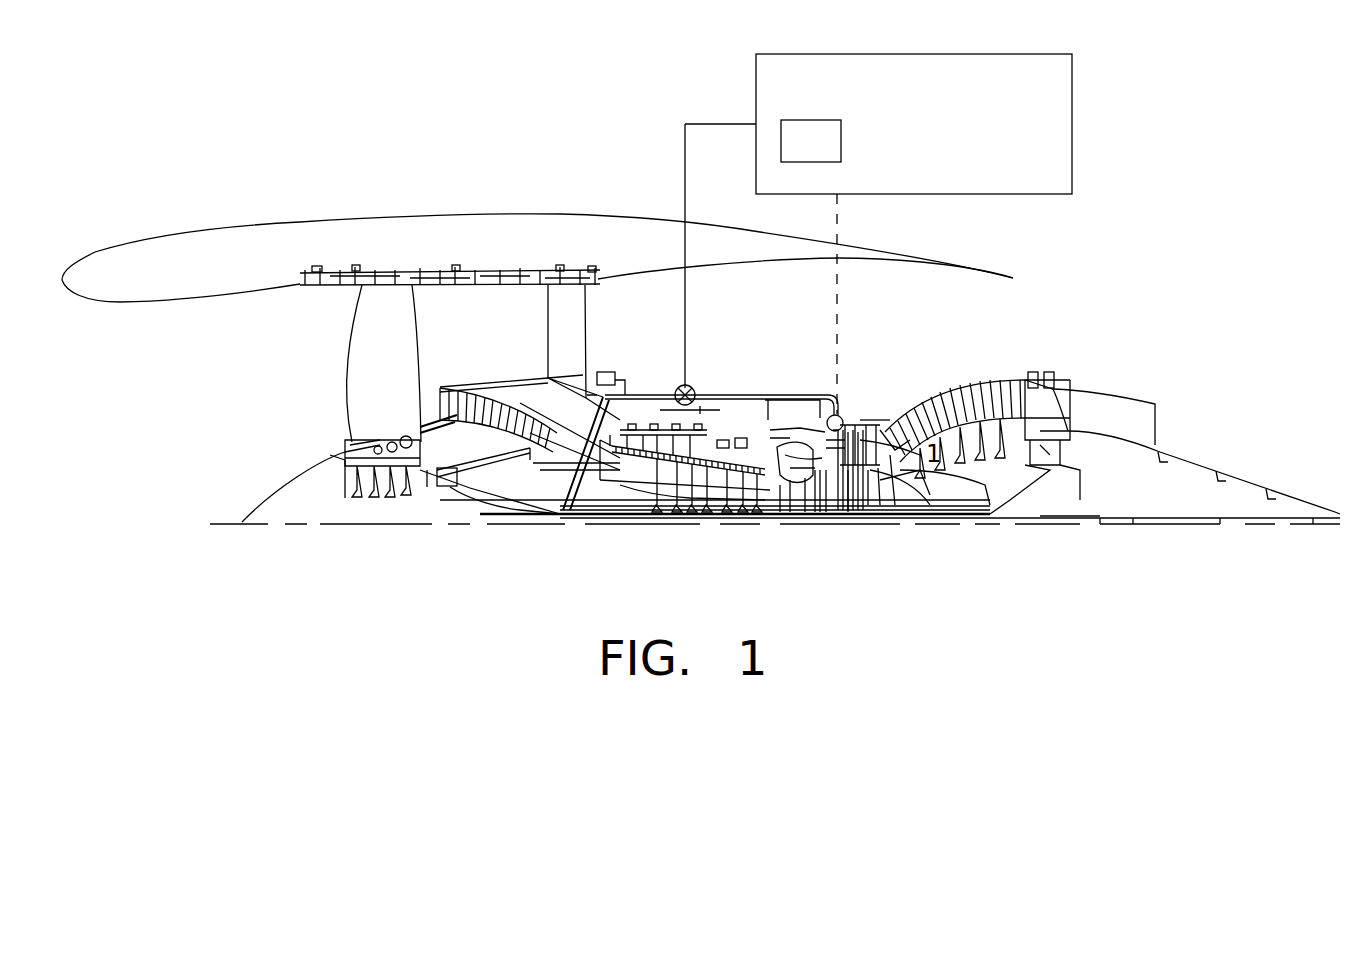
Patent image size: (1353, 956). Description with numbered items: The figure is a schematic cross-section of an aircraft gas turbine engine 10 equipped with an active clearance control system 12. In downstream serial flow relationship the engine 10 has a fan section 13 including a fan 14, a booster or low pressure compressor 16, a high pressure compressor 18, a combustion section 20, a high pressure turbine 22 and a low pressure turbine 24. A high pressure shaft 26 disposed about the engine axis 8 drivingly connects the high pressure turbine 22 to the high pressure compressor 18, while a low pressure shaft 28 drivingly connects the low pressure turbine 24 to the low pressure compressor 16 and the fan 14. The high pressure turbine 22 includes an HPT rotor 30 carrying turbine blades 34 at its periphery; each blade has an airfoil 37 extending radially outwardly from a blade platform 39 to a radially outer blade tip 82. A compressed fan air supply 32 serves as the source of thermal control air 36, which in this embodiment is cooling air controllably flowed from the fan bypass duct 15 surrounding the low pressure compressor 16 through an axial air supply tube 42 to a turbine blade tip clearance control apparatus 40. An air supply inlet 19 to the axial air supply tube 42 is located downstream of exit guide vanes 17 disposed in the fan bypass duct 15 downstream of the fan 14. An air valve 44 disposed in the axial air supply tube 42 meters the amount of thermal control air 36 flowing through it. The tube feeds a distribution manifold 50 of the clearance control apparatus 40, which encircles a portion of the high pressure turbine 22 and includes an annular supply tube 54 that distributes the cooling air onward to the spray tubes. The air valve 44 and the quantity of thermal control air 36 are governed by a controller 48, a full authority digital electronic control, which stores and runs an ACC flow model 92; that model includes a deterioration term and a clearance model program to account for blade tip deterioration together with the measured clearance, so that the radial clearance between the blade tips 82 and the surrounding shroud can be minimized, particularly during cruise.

The engine axis 8 is at (378, 524).
The aircraft gas turbine engine 10 is at (226, 594).
The active clearance control system 12 is at (776, 338).
The fan section 13 is at (451, 213).
The fan 14 is at (404, 359).
The fan bypass duct 15 is at (480, 308).
The booster or low pressure compressor (LPC) 16 is at (480, 386).
The exit guide vanes 17 is at (598, 304).
The high pressure compressor (HPC) 18 is at (705, 418).
The air supply inlet 19 is at (600, 371).
The combustion section 20 is at (770, 450).
The high pressure turbine (HPT) 22 is at (862, 500).
The low pressure turbine (LPT) 24 is at (990, 382).
The high pressure shaft 26 is at (792, 502).
The low pressure shaft 28 is at (927, 505).
The HPT rotor 30 is at (832, 505).
The compressed fan air supply 32 is at (658, 384).
The turbine blades 34 is at (900, 428).
The thermal control air 36 is at (650, 398).
The airfoils 37 is at (822, 505).
The blade platforms 39 is at (845, 505).
The turbine blade tip clearance control apparatus 40 is at (868, 412).
The axial air supply tube 42 is at (771, 396).
The air valve 44 is at (690, 388).
The controller 48 is at (937, 135).
The distribution manifold 50 is at (832, 432).
The annular supply tube 54 is at (831, 417).
The blade tips 82 is at (851, 430).
The ACC flow model 92 is at (818, 120).